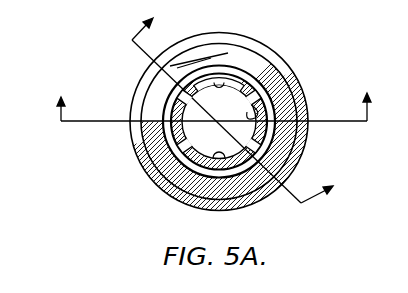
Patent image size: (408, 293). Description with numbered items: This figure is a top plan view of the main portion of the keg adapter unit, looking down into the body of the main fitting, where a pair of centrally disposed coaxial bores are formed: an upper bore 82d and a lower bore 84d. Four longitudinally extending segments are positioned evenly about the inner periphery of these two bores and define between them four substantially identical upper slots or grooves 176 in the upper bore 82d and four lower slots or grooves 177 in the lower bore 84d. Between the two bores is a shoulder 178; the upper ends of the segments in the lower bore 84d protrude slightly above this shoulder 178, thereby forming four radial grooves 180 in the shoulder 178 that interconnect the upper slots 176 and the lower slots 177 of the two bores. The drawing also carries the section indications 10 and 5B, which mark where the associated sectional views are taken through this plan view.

The section line 10- 10 is at (217, 98).
The section line 5B- 5B is at (235, 103).
The upper bore 82d is at (237, 86).
The lower bore 84d is at (221, 153).
The upper slots or grooves 176 is at (263, 93).
The lower slots or grooves 177 is at (298, 108).
The shoulder 178 is at (176, 113).
The radial grooves 180 is at (180, 168).